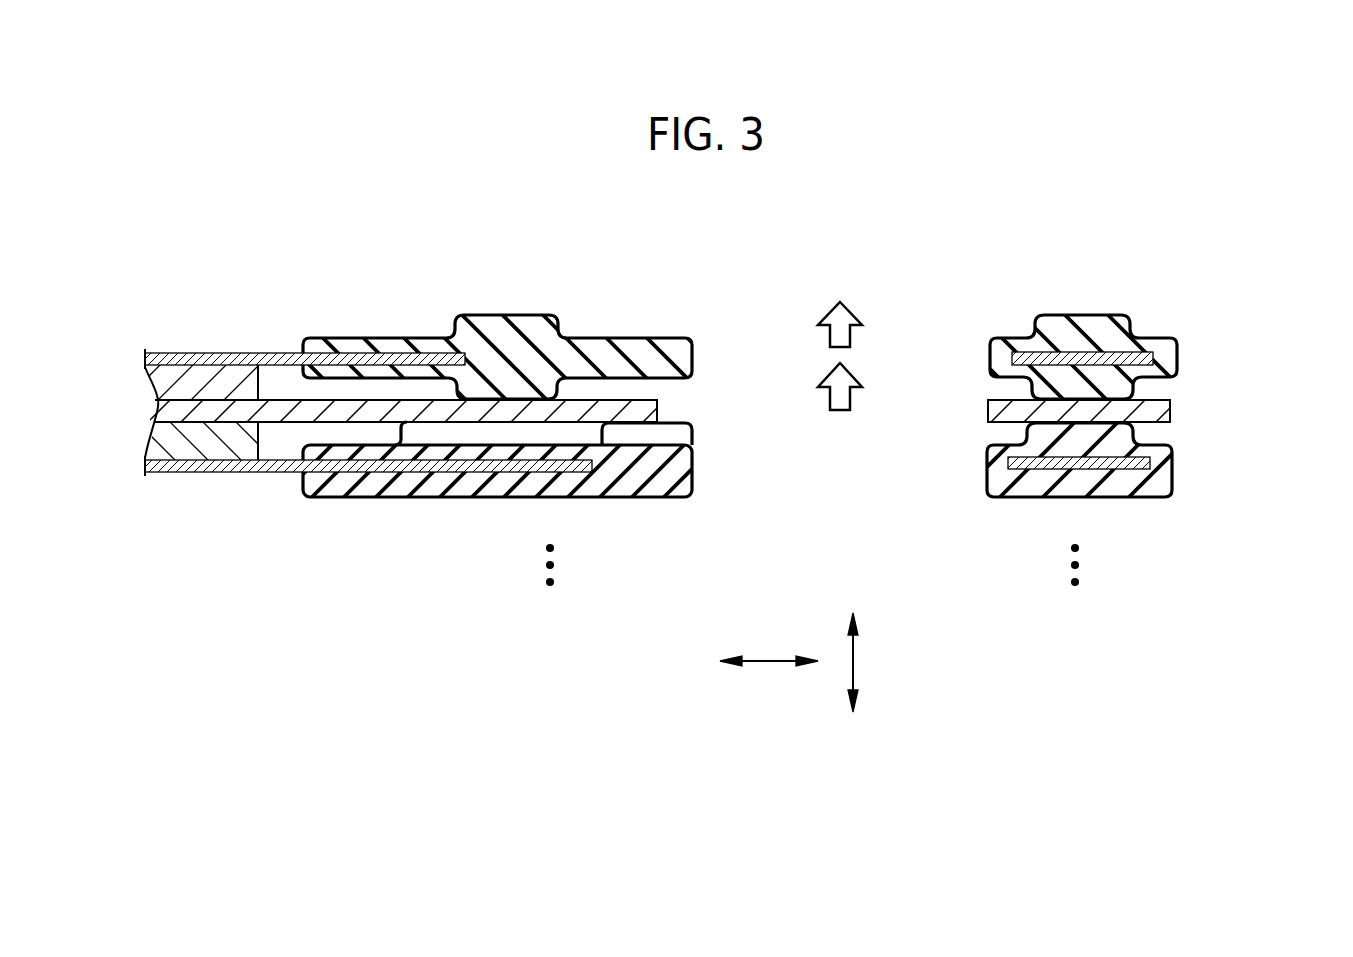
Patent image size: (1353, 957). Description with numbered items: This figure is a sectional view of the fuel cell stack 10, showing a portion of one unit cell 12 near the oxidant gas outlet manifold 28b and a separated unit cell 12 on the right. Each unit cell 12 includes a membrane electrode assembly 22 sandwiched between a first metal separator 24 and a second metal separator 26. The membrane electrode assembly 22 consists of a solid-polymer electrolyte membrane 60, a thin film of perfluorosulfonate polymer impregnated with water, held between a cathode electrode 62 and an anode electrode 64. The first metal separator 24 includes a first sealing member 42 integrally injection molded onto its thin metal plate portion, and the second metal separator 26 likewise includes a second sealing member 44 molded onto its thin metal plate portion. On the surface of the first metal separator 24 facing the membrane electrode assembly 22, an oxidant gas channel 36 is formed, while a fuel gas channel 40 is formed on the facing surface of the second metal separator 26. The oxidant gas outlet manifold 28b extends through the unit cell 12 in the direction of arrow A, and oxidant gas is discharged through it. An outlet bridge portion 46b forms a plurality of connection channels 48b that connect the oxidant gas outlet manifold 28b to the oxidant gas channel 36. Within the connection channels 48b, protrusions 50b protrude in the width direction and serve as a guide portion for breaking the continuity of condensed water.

The fuel cell stack 10 is at (728, 200).
The unit cell 12 is at (1101, 406).
The membrane electrode assembly 22 is at (682, 444).
The first metal separator 24 is at (1071, 484).
The second metal separator 26 is at (1082, 333).
The oxidant gas outlet manifold 28b is at (917, 333).
The oxidant gas channel 36 is at (290, 458).
The fuel gas channel 40 is at (262, 370).
The first sealing member 42 is at (1113, 490).
The second sealing member 44 is at (1093, 323).
The outlet bridge portion 46b is at (482, 420).
The connection channels 48b is at (437, 433).
The protrusions 50b is at (667, 435).
The solid-polymer electrolyte membrane 60 is at (230, 413).
The cathode electrode 62 is at (287, 548).
The anode electrode 64 is at (238, 377).